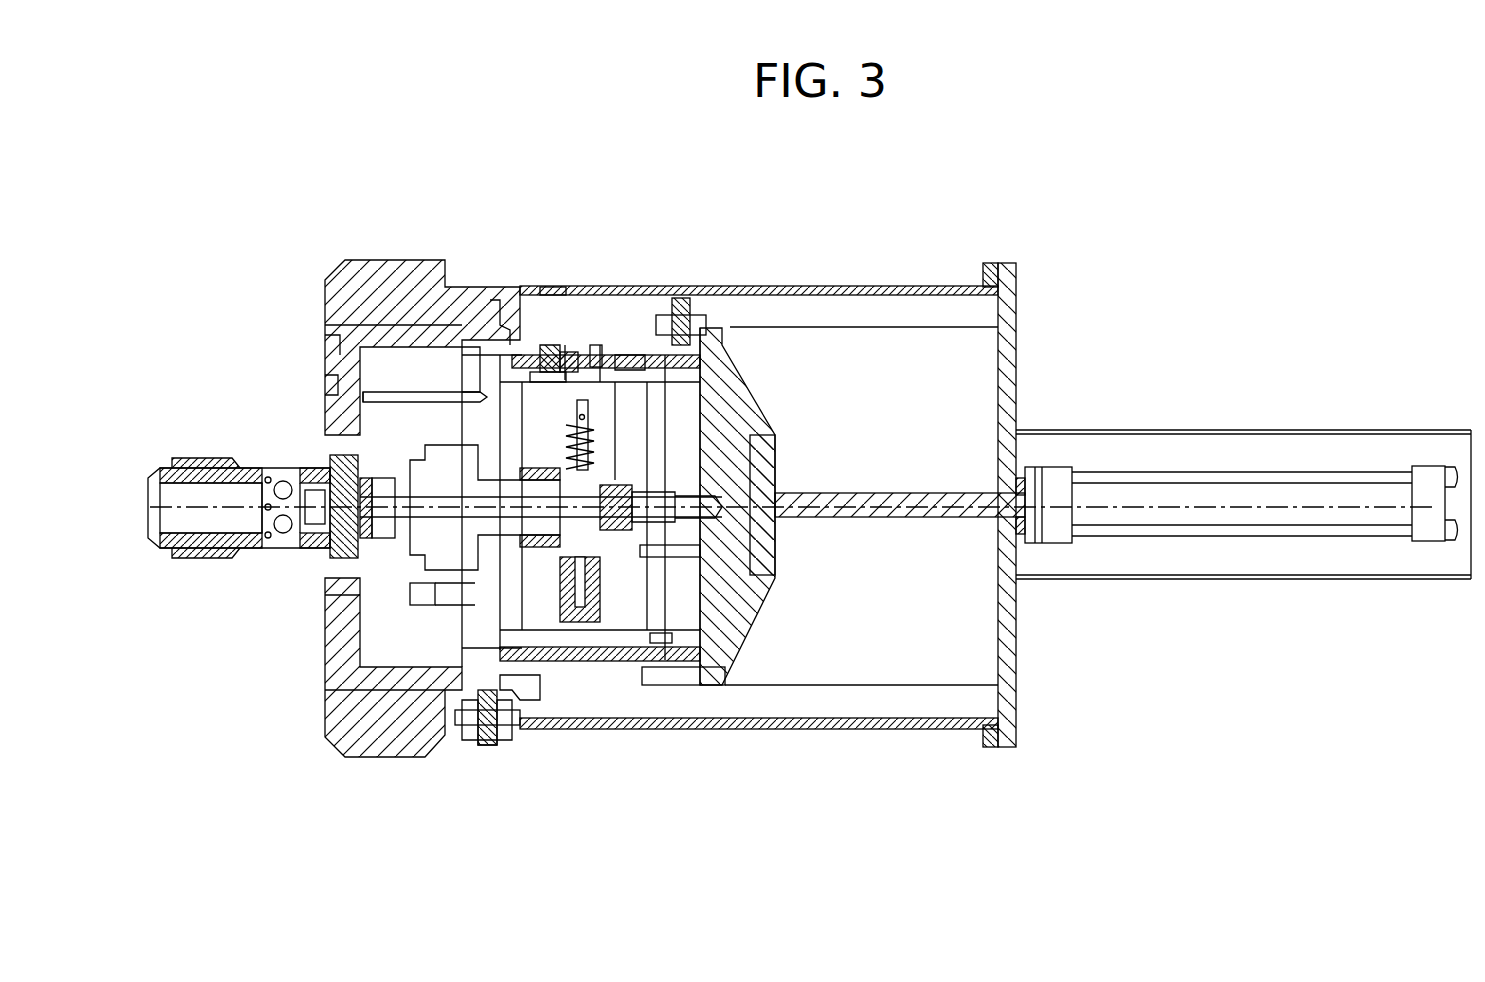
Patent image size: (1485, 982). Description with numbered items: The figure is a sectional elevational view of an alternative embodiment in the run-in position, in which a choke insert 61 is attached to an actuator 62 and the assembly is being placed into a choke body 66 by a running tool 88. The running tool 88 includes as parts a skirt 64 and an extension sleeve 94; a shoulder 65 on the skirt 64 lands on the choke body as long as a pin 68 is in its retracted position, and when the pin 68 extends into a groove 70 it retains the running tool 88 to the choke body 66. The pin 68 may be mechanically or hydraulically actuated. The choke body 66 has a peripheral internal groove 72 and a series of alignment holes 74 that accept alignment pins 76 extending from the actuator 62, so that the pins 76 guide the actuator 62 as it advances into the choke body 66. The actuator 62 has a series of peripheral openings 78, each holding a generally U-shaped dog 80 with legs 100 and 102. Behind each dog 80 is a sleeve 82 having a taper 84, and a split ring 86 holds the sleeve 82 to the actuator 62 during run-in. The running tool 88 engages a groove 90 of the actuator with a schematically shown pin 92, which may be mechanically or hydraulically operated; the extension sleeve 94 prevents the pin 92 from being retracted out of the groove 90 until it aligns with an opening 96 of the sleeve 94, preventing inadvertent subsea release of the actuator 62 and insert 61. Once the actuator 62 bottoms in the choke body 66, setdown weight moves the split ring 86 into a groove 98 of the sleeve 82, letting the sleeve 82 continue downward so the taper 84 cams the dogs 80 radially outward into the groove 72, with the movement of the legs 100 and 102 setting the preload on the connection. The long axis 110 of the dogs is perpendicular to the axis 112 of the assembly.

The choke insert 61 is at (262, 466).
The actuator 62 is at (478, 431).
The skirt 64 is at (375, 304).
The shoulder 65 is at (505, 330).
The choke body 66 is at (338, 352).
The pin 68 is at (487, 745).
The groove 70 is at (505, 688).
The peripheral internal groove 72 is at (448, 355).
The alignment holes 74 is at (343, 388).
The alignment pins 76 is at (416, 402).
The peripheral openings 78 is at (548, 346).
The dog 80 is at (550, 374).
The sleeve 82 is at (630, 355).
The taper 84 is at (570, 368).
The split ring 86 is at (598, 345).
The running tool 88 is at (765, 552).
The groove 90 is at (700, 352).
The pin 92 is at (680, 300).
The extension sleeve 94 is at (855, 286).
The opening 96 is at (553, 290).
The groove 98 is at (618, 383).
The leg 100 is at (600, 345).
The leg 102 is at (568, 345).
The long axis of the dogs 110 is at (575, 410).
The axis 112 is at (905, 517).